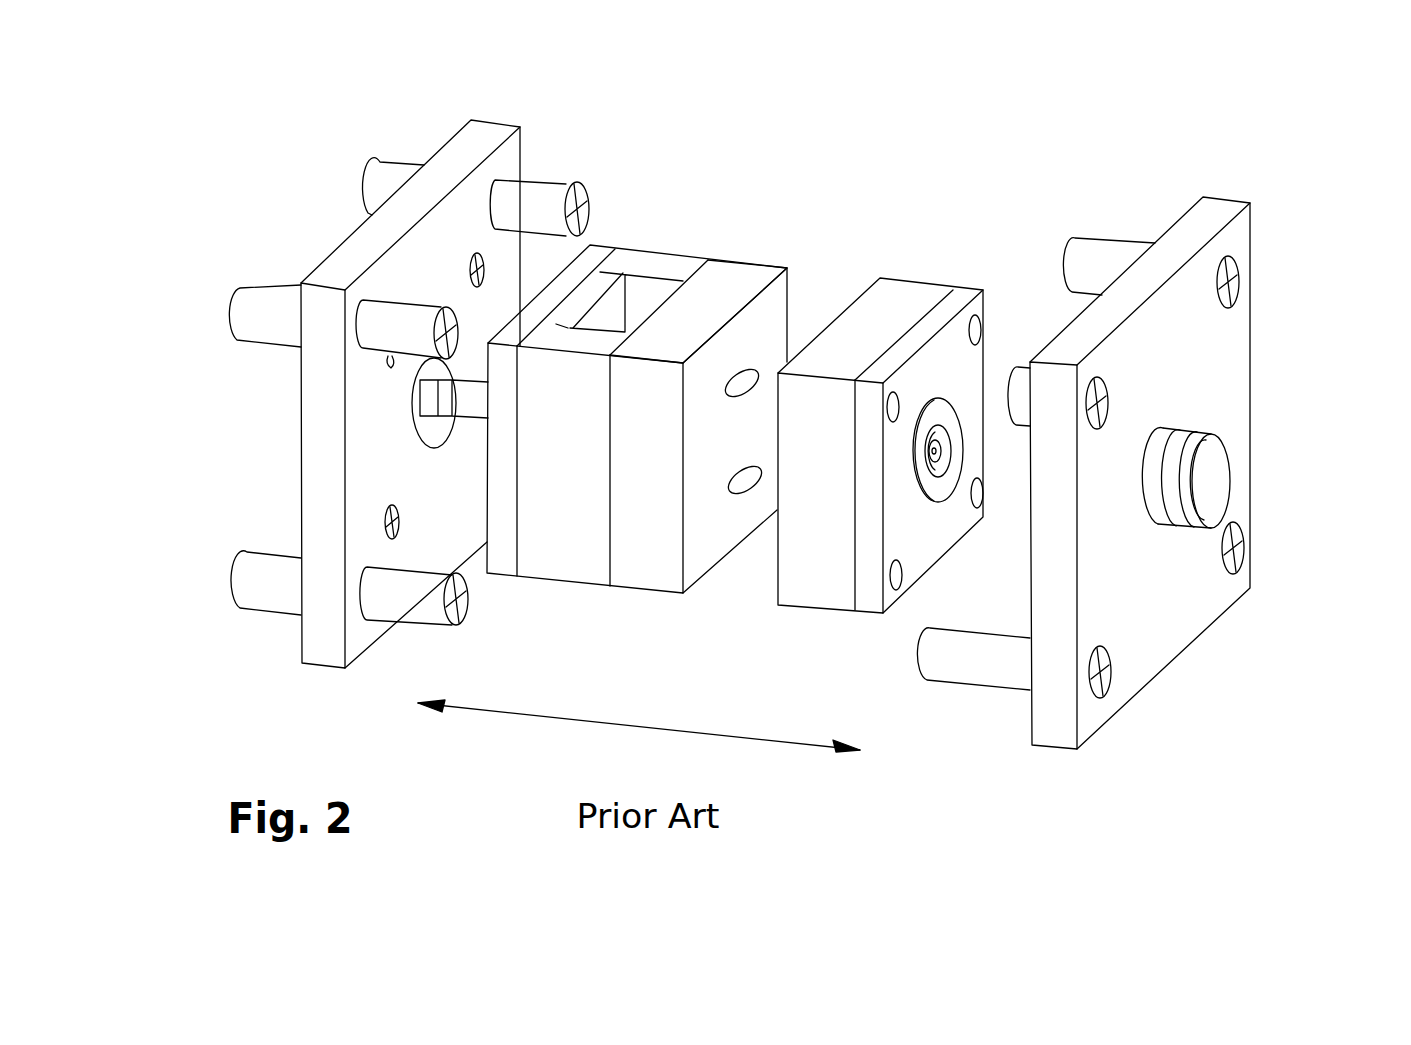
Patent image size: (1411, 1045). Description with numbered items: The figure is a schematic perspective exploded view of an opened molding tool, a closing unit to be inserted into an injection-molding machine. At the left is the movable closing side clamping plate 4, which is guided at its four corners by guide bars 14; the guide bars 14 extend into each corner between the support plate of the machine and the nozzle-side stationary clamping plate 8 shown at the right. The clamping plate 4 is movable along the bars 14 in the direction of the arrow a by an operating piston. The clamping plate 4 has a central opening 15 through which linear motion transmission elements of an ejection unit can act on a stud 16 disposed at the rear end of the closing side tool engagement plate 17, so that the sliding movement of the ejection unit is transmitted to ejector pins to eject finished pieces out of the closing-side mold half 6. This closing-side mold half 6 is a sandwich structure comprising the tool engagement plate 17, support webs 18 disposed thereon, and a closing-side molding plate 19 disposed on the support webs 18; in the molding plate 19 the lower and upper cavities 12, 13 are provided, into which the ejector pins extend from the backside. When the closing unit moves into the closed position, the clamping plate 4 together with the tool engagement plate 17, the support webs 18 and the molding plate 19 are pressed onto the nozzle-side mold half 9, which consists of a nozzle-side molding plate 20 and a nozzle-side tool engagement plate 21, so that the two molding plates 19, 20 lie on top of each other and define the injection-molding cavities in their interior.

The closing side clamping plate 4 is at (465, 160).
The closing-side mold half 6 is at (666, 369).
The nozzle-side stationary clamping plate 8 is at (1220, 360).
The nozzle-side mold half 9 is at (906, 394).
The lower cavity 12 is at (748, 378).
The upper cavity 13 is at (730, 510).
The guide bars 14 is at (243, 303).
The central opening 15 is at (433, 437).
The stud 16 is at (475, 410).
The closing side tool engagement plate 17 is at (600, 250).
The support webs 18 is at (648, 260).
The closing-side molding plate 19 is at (737, 272).
The nozzle-side molding plate 20 is at (898, 282).
The nozzle-side tool engagement plate 21 is at (953, 293).
The arrow a is at (639, 729).